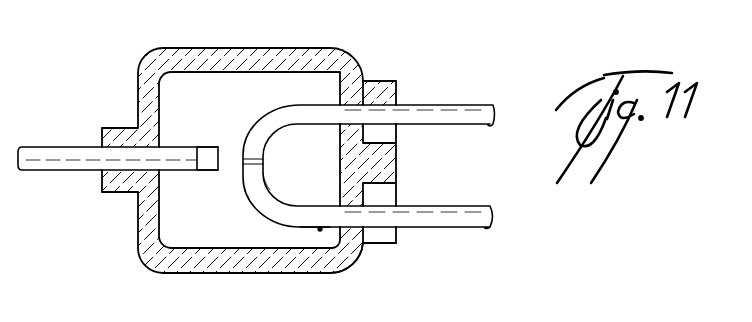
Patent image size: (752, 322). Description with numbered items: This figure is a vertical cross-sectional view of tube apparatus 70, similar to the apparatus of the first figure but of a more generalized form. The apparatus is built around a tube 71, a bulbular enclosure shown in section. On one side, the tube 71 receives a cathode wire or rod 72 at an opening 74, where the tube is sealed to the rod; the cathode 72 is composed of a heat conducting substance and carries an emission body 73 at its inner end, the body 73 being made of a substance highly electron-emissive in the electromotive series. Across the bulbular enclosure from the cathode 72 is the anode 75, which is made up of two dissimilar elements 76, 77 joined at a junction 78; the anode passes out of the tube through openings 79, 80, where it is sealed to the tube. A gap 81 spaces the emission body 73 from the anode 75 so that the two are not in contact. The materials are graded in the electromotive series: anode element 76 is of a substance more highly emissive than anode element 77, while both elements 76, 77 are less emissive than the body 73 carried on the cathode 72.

The tube apparatus 70 is at (131, 251).
The tube 71 is at (353, 263).
The cathode wire or rod 72 is at (45, 172).
The emission body 73 is at (205, 146).
The opening 74 is at (118, 128).
The anode 75 is at (321, 231).
The anode element 76 is at (307, 100).
The anode element 77 is at (300, 228).
The junction 78 is at (260, 182).
The opening 79 is at (380, 82).
The opening 80 is at (387, 244).
The gap 81 is at (233, 157).